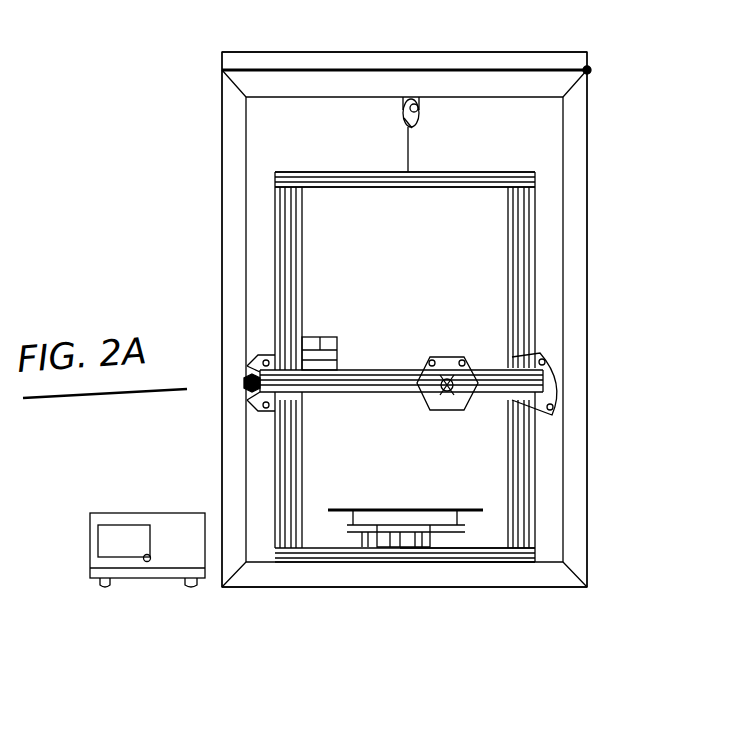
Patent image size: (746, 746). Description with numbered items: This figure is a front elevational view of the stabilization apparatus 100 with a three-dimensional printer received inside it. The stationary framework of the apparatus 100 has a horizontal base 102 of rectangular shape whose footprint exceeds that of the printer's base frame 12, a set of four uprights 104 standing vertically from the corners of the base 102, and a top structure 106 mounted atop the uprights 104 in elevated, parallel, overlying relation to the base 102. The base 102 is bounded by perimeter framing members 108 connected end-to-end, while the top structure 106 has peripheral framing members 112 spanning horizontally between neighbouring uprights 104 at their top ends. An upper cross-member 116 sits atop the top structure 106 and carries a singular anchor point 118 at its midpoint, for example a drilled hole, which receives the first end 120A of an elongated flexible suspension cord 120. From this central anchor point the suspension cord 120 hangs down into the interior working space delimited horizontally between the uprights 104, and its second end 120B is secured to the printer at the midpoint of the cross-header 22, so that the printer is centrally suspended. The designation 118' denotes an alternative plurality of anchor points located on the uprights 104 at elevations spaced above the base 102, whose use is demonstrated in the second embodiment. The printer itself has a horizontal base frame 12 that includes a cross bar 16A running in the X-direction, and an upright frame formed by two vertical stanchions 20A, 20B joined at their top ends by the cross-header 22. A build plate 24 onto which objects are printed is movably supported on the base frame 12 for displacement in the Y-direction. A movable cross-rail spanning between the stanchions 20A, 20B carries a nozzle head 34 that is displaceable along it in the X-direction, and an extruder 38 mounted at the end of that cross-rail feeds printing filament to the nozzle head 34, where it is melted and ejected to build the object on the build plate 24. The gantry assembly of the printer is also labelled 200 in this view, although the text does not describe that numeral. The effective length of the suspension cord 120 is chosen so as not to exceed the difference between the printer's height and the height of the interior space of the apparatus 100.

The stabilization apparatus 100 is at (166, 130).
The horizontal base 102 is at (316, 584).
The uprights 104 is at (235, 245).
The top structure 106 is at (590, 67).
The perimeter framing members 108 is at (420, 578).
The peripheral framing members 112 is at (307, 88).
The upper cross-member 116 is at (518, 62).
The anchor point 118 is at (370, 128).
The alternative anchor points 118' is at (416, 319).
The suspension cord 120 is at (408, 150).
The first end of suspension cord 120A is at (350, 110).
The second end of suspension cord 120B is at (412, 168).
The gantry frame 200 is at (328, 172).
The cross-header 22 is at (462, 180).
The stanchion 20A is at (295, 285).
The stanchion 20B is at (510, 442).
The horizontal base frame 12 is at (386, 566).
The cross bar 16A is at (500, 560).
The extruder 38 is at (327, 342).
The nozzle head 34 is at (450, 363).
The build plate 24 is at (385, 508).